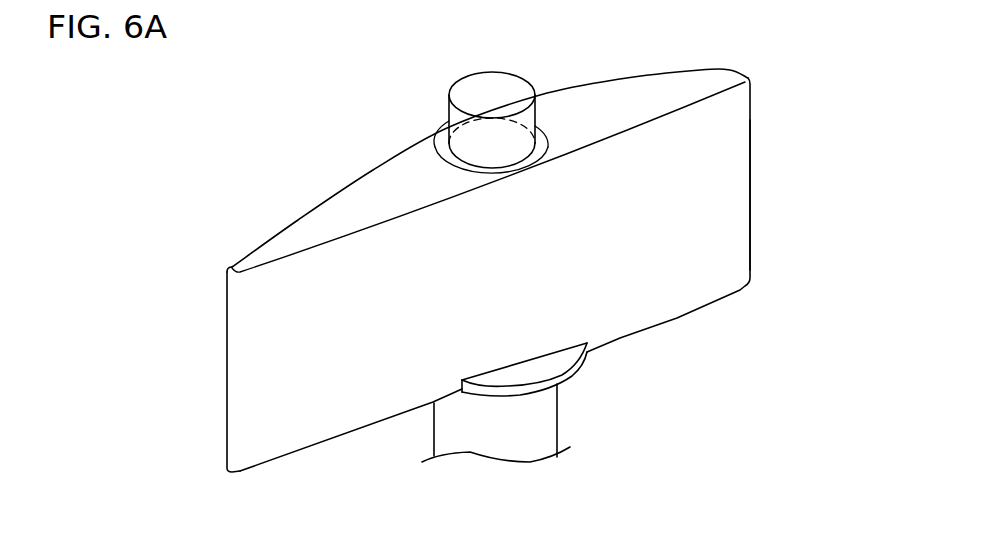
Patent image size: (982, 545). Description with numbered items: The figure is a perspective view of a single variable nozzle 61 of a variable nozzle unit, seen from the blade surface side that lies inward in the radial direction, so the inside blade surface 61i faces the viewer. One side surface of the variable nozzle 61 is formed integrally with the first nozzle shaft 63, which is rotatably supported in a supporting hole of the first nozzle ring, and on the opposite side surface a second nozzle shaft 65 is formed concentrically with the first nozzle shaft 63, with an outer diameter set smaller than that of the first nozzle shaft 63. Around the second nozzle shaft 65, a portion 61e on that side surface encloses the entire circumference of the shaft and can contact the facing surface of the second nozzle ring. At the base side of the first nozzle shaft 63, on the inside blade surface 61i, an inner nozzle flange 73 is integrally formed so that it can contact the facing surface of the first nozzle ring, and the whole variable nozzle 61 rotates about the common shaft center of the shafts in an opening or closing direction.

The variable nozzle 61 is at (318, 161).
The portion enclosing the second nozzle shaft 61e is at (430, 139).
The inside blade surface 61i is at (745, 212).
The first nozzle shaft 63 is at (497, 452).
The second nozzle shaft 65 is at (484, 78).
The inner nozzle flange 73 is at (577, 372).